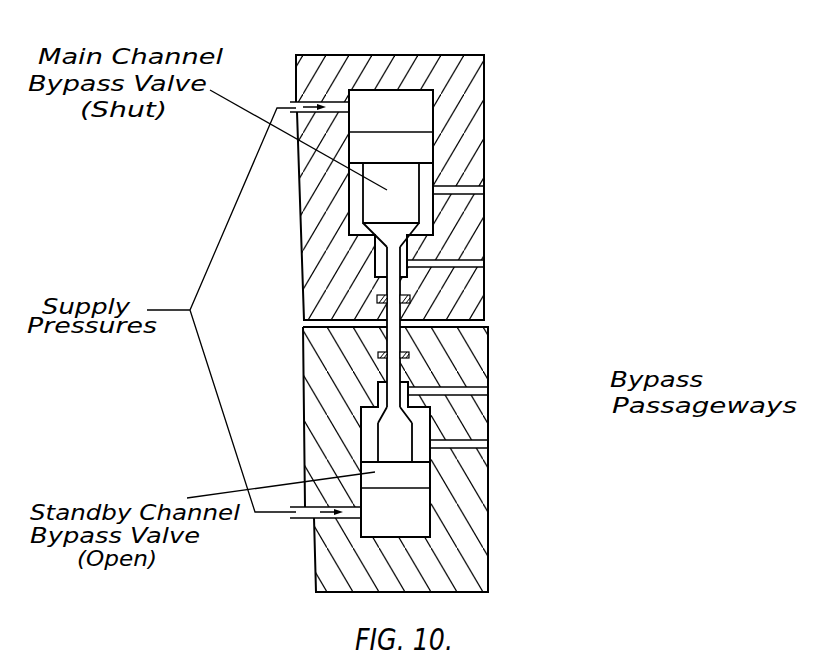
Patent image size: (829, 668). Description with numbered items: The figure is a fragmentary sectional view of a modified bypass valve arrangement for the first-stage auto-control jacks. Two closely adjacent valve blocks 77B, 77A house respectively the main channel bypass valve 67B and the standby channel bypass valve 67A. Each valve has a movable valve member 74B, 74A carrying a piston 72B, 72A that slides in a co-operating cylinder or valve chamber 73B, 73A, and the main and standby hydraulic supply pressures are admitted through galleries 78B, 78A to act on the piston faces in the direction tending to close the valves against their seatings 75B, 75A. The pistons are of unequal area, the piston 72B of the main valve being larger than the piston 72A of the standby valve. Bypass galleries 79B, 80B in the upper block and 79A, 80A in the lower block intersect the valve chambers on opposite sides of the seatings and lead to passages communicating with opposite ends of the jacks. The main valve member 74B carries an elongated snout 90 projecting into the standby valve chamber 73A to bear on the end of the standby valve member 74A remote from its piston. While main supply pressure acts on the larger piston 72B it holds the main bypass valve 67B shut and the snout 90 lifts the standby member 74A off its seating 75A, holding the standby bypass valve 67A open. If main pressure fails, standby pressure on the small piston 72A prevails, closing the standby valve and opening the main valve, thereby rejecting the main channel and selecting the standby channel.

The valve block 77B is at (546, 57).
The valve block 77A is at (554, 562).
The gallery 78B is at (322, 102).
The gallery 78A is at (311, 518).
The piston 72B is at (410, 107).
The piston 72A is at (396, 478).
The movable valve member 74B is at (367, 205).
The movable valve member 74A is at (383, 450).
The main channel bypass valve 67B is at (450, 165).
The standby channel bypass valve 67A is at (445, 477).
The valve chamber 73B is at (430, 170).
The valve chamber 73A is at (422, 472).
The bypass gallery 79B is at (612, 363).
The bypass gallery 79A is at (605, 368).
The valve seating 75B is at (412, 242).
The valve seating 75A is at (440, 406).
The bypass gallery 80B is at (607, 365).
The bypass gallery 80A is at (603, 382).
The snout 90 is at (377, 352).